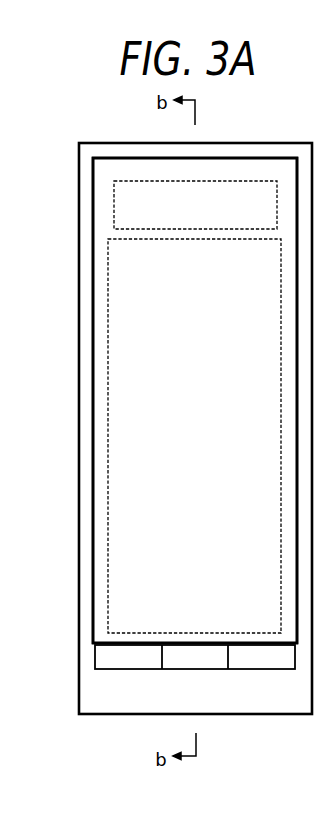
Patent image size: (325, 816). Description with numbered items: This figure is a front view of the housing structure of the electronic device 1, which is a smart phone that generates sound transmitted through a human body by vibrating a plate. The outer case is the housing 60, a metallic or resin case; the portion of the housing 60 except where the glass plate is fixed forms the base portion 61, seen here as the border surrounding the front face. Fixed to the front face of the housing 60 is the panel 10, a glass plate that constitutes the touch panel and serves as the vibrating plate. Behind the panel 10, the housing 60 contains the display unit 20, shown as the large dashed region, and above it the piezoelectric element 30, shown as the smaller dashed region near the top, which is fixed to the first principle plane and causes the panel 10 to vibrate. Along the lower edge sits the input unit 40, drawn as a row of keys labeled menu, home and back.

The electronic device 1 is at (195, 403).
The panel 10 is at (247, 158).
The display unit 20 is at (108, 288).
The piezoelectric element 30 is at (114, 205).
The input unit 40 is at (105, 670).
The housing 60 is at (203, 143).
The base portion 61 is at (278, 150).